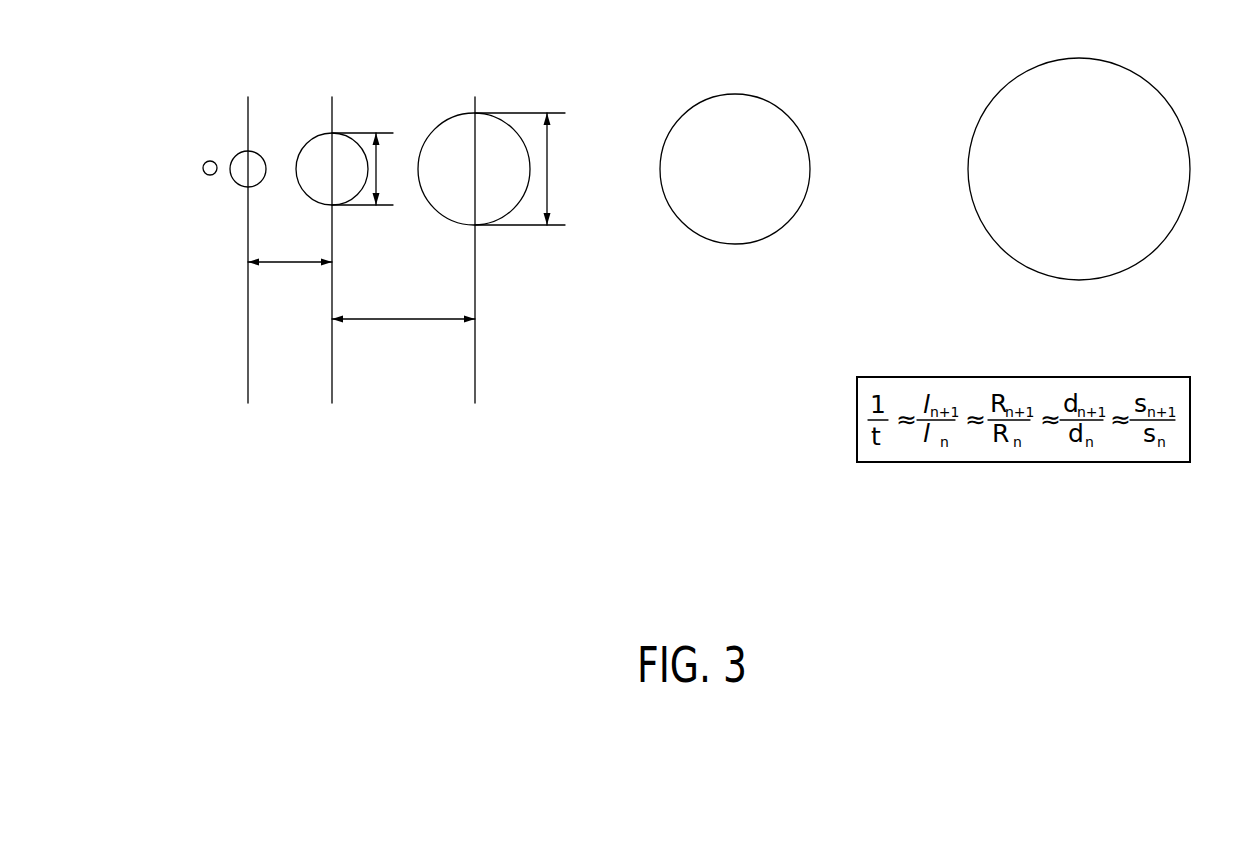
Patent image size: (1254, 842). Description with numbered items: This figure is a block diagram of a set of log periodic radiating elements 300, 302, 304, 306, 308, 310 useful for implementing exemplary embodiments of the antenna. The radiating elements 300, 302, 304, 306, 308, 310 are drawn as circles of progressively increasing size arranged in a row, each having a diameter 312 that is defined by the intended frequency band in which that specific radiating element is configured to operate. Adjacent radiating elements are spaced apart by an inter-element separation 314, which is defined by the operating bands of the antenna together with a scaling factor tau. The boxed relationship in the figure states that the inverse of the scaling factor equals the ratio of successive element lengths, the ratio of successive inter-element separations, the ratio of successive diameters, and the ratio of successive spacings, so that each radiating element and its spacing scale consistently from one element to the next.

The log periodic radiating element 300 is at (207, 162).
The log periodic radiating element 302 is at (242, 152).
The log periodic radiating element 304 is at (315, 135).
The log periodic radiating element 306 is at (445, 122).
The log periodic radiating element 308 is at (772, 102).
The log periodic radiating element 310 is at (1135, 73).
The diameter 312 is at (550, 148).
The inter-element separation 314 is at (270, 263).